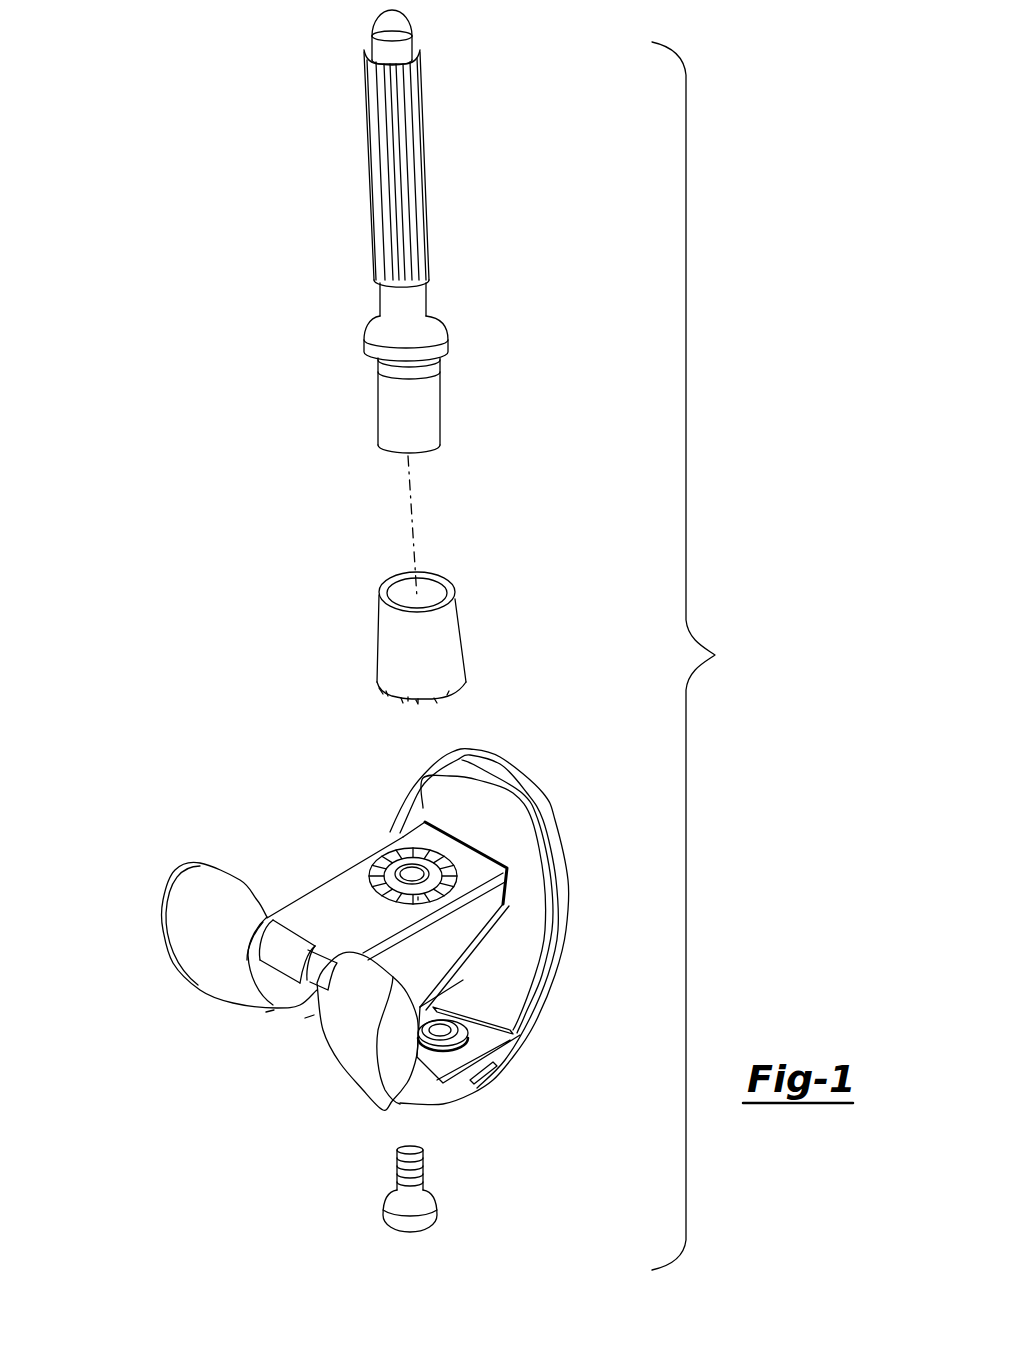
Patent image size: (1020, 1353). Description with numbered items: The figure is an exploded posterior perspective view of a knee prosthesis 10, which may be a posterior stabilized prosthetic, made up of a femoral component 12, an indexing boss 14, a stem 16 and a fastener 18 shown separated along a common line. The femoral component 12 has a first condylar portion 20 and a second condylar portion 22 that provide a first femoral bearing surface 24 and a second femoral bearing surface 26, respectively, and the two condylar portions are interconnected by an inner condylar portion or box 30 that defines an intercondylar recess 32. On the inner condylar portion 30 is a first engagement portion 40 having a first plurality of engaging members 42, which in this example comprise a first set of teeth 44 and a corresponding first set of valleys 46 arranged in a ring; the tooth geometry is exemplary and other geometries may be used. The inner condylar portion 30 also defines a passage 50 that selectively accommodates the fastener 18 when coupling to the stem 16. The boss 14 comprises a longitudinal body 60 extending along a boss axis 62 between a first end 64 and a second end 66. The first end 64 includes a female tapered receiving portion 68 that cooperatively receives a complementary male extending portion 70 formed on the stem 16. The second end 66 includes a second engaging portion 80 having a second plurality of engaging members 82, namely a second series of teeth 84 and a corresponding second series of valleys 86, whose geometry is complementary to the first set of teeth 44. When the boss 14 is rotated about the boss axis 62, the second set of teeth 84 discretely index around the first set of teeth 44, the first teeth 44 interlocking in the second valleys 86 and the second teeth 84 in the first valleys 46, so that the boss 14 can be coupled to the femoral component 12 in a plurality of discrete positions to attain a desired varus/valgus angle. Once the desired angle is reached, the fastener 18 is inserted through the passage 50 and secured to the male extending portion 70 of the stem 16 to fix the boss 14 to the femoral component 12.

The knee prosthesis 10 is at (240, 365).
The femoral component 12 is at (381, 953).
The indexing boss 14 is at (428, 652).
The stem 16 is at (366, 168).
The fastener 18 is at (426, 1215).
The first condylar portion 20 is at (350, 1047).
The second condylar portion 22 is at (205, 967).
The first femoral bearing surface 24 is at (458, 1110).
The second femoral bearing surface 26 is at (270, 1015).
The inner condylar portion 30 is at (323, 907).
The intercondylar recess 32 is at (310, 1019).
The first engagement portion 40 is at (410, 920).
The first plurality of engaging members 42 is at (425, 901).
The first set of teeth 44 is at (455, 872).
The first set of valleys 46 is at (396, 898).
The passage 50 is at (437, 860).
The longitudinal body 60 is at (468, 662).
The boss axis 62 is at (411, 525).
The first end 64 is at (446, 578).
The second end 66 is at (452, 697).
The female tapered receiving portion 68 is at (398, 592).
The male extending portion 70 is at (428, 397).
The second engaging portion 80 is at (376, 691).
The second plurality of engaging members 82 is at (405, 702).
The second series of teeth 84 is at (438, 700).
The second series of valleys 86 is at (421, 702).